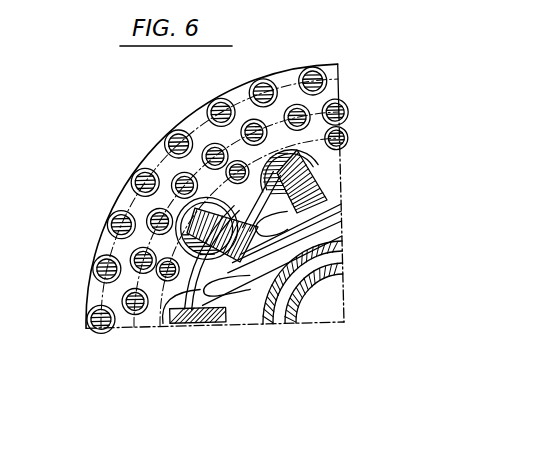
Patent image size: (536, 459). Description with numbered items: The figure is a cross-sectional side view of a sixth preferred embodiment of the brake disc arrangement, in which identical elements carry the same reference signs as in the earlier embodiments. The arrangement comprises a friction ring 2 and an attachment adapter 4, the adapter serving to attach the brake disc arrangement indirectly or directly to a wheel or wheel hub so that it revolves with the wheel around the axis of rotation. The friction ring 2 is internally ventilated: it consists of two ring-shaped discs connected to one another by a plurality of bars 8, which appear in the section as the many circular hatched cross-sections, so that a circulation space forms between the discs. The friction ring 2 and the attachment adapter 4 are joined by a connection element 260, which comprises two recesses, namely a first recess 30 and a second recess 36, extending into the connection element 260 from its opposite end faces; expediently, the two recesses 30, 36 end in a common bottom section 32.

The friction ring 2 is at (332, 88).
The attachment adapter 4 is at (249, 323).
The bars 8 is at (97, 283).
The first recess 30 is at (327, 167).
The common bottom section 32 is at (285, 197).
The second recess 36 is at (317, 213).
The connection element 260 is at (327, 183).